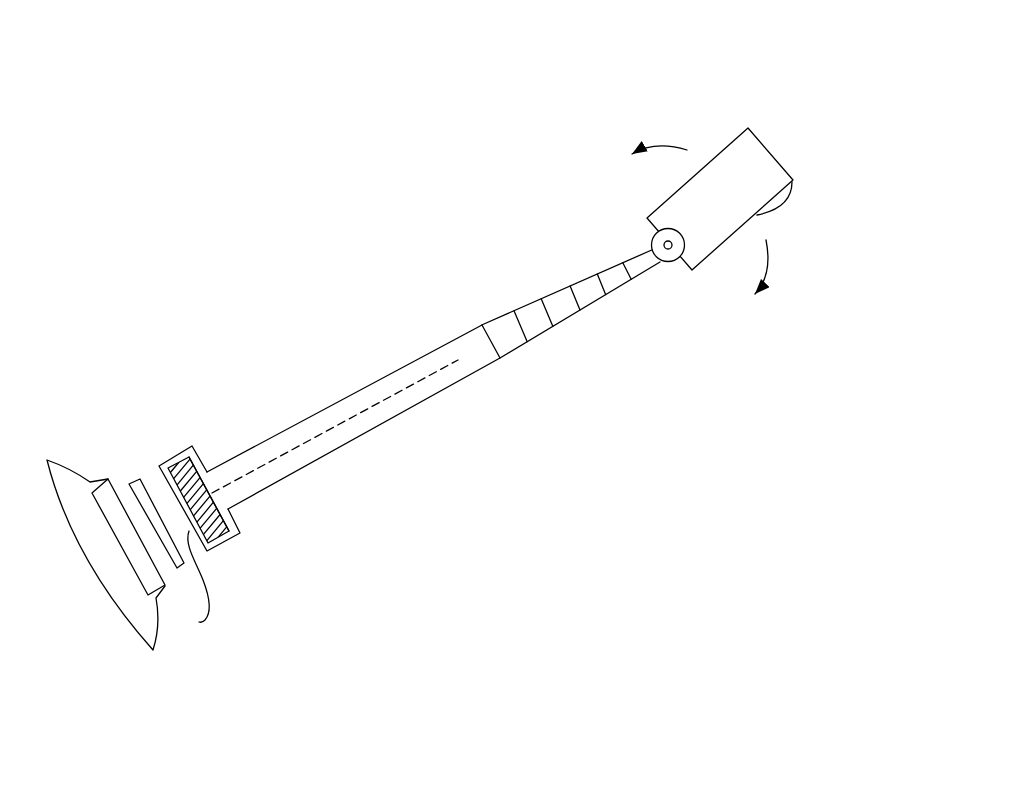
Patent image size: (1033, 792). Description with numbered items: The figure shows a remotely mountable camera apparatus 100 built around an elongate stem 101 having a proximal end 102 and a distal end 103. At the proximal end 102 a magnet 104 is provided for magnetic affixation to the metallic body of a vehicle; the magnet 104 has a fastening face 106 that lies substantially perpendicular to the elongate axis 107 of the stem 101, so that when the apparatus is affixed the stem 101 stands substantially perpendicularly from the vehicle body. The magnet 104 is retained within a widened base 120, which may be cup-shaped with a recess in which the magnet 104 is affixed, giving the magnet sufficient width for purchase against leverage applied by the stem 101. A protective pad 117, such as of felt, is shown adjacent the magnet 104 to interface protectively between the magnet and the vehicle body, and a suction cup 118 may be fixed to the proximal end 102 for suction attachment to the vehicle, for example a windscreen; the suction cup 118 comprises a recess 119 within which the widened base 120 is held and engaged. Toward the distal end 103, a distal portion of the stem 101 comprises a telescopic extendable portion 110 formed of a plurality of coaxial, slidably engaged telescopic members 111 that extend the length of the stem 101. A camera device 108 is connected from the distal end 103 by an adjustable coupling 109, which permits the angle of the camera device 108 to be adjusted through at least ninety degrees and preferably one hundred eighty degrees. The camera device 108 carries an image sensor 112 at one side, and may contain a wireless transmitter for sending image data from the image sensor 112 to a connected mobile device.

The remotely mountable camera apparatus 100 is at (876, 94).
The stem 101 is at (456, 400).
The proximal end 102 is at (253, 583).
The distal end 103 is at (664, 318).
The magnet 104 is at (183, 453).
The fastening face 106 is at (199, 622).
The elongate axis 107 is at (337, 426).
The camera device 108 is at (711, 126).
The adjustable coupling 109 is at (655, 236).
The telescopic extendable portion 110 is at (671, 266).
The telescopic members 111 is at (499, 326).
The image sensor 112 is at (803, 214).
The protective pad 117 is at (133, 482).
The suction cup 118 is at (67, 468).
The recess 119 is at (123, 538).
The widened base 120 is at (232, 522).